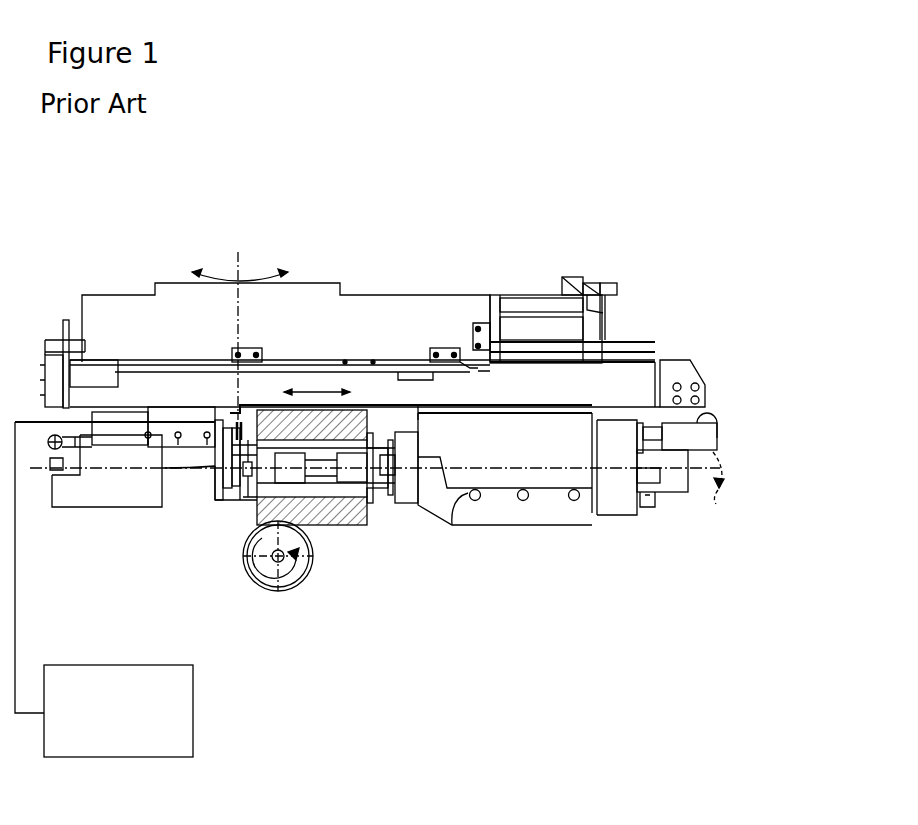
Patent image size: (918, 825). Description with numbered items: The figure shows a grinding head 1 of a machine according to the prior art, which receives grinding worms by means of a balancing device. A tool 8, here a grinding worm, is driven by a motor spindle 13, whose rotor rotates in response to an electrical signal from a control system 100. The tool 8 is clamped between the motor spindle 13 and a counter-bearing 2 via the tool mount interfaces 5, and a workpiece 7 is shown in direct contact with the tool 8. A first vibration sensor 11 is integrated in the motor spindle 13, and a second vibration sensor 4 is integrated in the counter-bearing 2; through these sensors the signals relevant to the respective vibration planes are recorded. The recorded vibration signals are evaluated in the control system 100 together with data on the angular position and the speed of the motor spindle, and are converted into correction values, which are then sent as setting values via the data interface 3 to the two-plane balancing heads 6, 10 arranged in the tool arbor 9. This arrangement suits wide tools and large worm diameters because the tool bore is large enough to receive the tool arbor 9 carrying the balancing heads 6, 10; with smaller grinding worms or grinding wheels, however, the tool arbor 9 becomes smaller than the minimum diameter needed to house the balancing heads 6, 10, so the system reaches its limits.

The grinding head 1 is at (489, 226).
The counter-bearing 2 is at (108, 490).
The data interface 3 is at (231, 450).
The second vibration sensor 4 is at (233, 468).
The tool mount interfaces 5 is at (243, 484).
The two-plane balancing head 6 is at (262, 573).
The workpiece 7 is at (277, 588).
The tool 8 is at (333, 528).
The tool arbor 9 is at (345, 528).
The two-plane balancing head 10 is at (370, 528).
The first vibration sensor 11 is at (390, 506).
The motor spindle 13 is at (508, 508).
The control system 100 is at (115, 589).